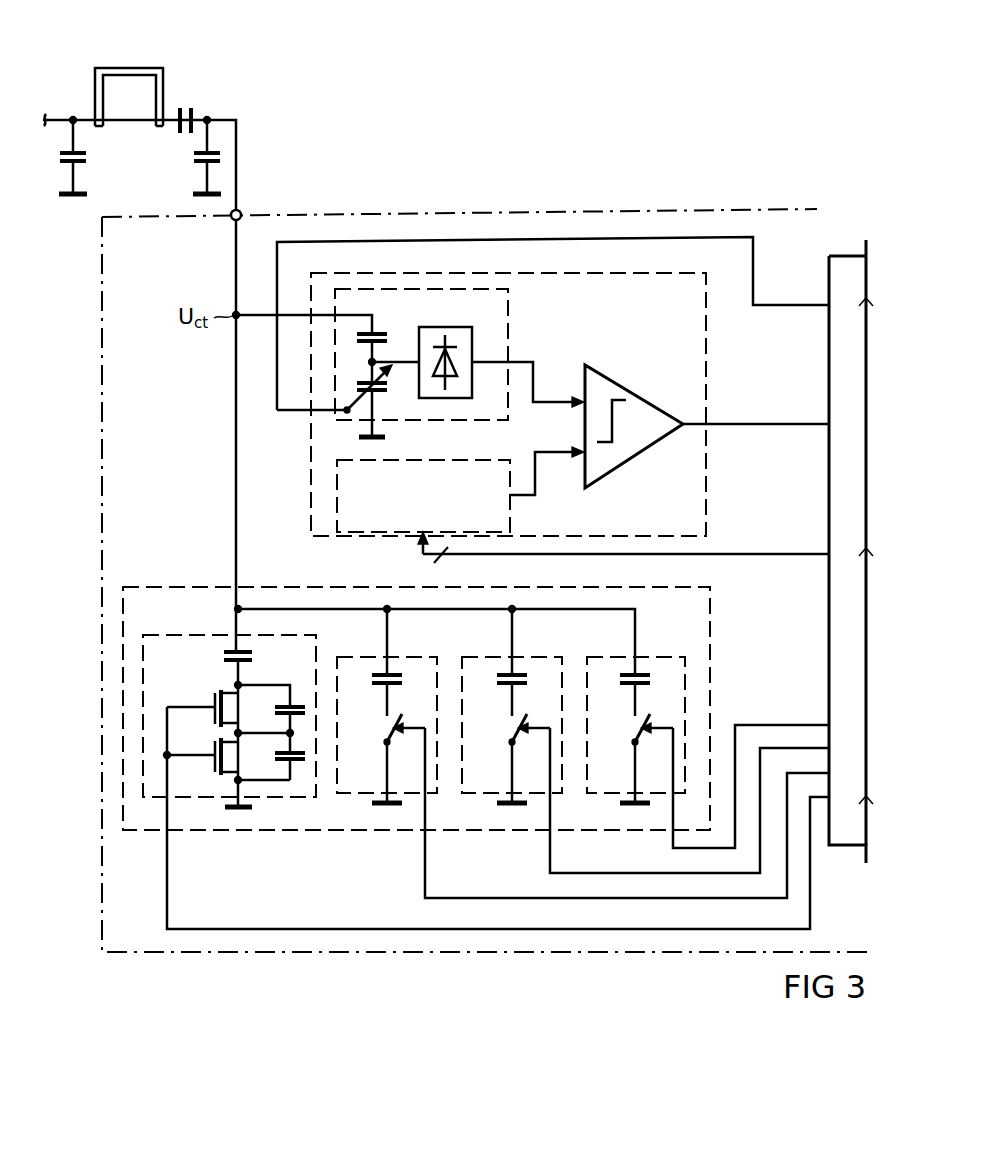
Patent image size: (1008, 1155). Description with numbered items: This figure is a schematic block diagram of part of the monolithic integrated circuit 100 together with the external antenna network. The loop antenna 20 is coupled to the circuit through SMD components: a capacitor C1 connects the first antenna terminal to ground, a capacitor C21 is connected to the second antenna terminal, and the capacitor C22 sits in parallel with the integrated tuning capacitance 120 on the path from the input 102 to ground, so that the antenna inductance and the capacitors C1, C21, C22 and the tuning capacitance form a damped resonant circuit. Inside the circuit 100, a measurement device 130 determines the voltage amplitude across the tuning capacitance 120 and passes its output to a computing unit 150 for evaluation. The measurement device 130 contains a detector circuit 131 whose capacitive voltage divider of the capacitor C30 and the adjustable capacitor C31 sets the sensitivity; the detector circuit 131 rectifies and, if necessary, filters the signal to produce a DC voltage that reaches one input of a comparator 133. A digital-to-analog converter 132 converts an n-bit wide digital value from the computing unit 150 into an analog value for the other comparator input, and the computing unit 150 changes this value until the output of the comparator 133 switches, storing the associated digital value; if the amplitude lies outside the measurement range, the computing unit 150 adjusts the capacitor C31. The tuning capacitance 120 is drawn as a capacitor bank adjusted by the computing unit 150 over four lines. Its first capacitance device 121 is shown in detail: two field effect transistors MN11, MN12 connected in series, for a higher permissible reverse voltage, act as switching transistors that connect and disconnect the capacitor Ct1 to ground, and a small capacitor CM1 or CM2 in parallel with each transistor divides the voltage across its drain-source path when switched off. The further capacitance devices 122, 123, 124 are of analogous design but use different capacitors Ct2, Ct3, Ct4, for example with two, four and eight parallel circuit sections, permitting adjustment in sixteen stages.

The loop antenna 20 is at (137, 66).
The capacitor C1 is at (88, 158).
The capacitor C21 is at (193, 110).
The capacitor C22 is at (191, 158).
The input 102 is at (245, 211).
The monolithic integrated circuit 100 is at (508, 209).
The measurement device 130 is at (532, 411).
The detector circuit 131 is at (410, 373).
The digital-to-analog converter 132 is at (514, 518).
The comparator 133 is at (622, 380).
The capacitor C30 is at (389, 335).
The adjustable capacitor C31 is at (395, 395).
The computing unit 150 is at (838, 250).
The adjustable tuning capacitance 120 is at (151, 580).
The first capacitance device 121 is at (486, 765).
The capacitance device 122 is at (583, 753).
The capacitance device 123 is at (645, 741).
The capacitance device 124 is at (708, 731).
The capacitor Ct1 is at (247, 667).
The capacitor Ct2 is at (377, 683).
The capacitor Ct3 is at (500, 683).
The capacitor Ct4 is at (623, 683).
The small capacitor CM1 is at (276, 716).
The small capacitor CM2 is at (276, 764).
The field effect transistor MN11 is at (210, 699).
The field effect transistor MN12 is at (210, 773).